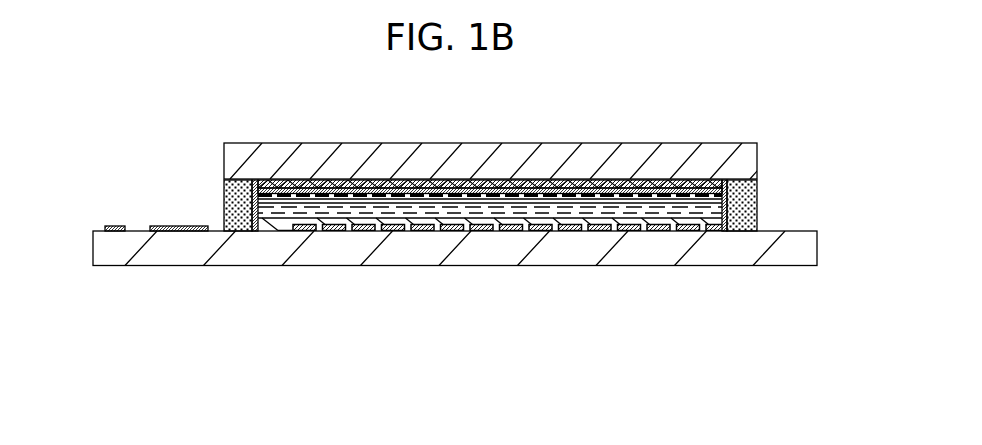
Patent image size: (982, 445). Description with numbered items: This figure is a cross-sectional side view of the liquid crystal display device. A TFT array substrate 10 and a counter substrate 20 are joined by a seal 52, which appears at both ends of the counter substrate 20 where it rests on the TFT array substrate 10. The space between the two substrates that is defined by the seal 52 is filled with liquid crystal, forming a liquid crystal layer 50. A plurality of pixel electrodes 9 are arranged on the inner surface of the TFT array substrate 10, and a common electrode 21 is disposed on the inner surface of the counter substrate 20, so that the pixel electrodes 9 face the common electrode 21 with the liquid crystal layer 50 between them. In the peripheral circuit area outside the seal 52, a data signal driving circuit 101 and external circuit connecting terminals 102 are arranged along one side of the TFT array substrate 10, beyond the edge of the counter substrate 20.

The pixel electrodes 9 is at (445, 231).
The TFT array substrate 10 is at (520, 253).
The counter substrate 20 is at (468, 148).
The common electrode 21 is at (564, 181).
The liquid crystal layer 50 is at (288, 211).
The seal 52 is at (223, 183).
The data signal driving circuit 101 is at (168, 227).
The external circuit connecting terminals 102 is at (115, 227).